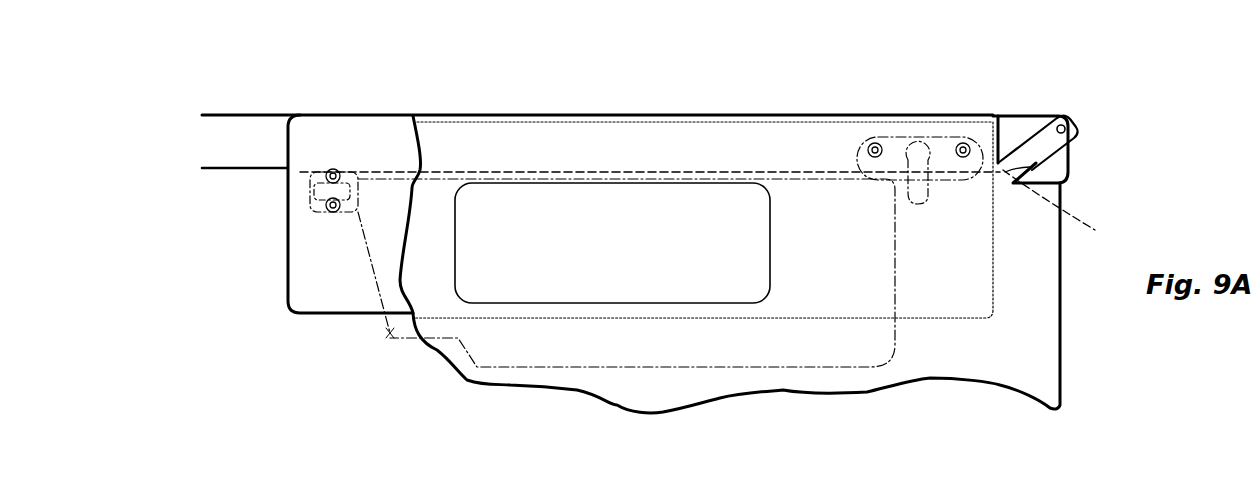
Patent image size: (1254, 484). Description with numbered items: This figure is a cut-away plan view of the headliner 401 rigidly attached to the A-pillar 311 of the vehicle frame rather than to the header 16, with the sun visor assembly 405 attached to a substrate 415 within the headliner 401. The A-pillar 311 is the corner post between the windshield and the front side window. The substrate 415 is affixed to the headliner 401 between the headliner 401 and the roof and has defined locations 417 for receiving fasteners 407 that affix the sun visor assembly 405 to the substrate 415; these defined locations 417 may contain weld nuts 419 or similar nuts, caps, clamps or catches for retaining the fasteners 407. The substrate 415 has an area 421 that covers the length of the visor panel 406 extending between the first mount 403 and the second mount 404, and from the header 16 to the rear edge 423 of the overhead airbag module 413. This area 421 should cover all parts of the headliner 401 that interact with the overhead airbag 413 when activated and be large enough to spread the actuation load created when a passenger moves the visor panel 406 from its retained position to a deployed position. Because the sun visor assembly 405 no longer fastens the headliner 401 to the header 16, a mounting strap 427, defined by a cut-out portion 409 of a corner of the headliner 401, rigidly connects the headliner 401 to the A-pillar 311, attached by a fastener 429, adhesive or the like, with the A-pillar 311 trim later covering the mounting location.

The header 16 is at (695, 137).
The A-pillar 311 is at (1060, 160).
The headliner 401 is at (730, 264).
The first mount 403 is at (1066, 205).
The second mount 404 is at (312, 197).
The sun visor assembly 405 is at (903, 110).
The visor panel 406 is at (392, 334).
The fasteners 407 is at (885, 152).
The cut-out portion 409 is at (1062, 182).
The overhead airbag module 413 is at (612, 212).
The substrate 415 is at (1118, 352).
The defined locations 417 is at (318, 173).
The weld nuts 419 is at (333, 170).
The area 421 is at (783, 298).
The rear edge 423 is at (562, 303).
The mounting strap 427 is at (1032, 143).
The fastener 429 is at (1064, 128).